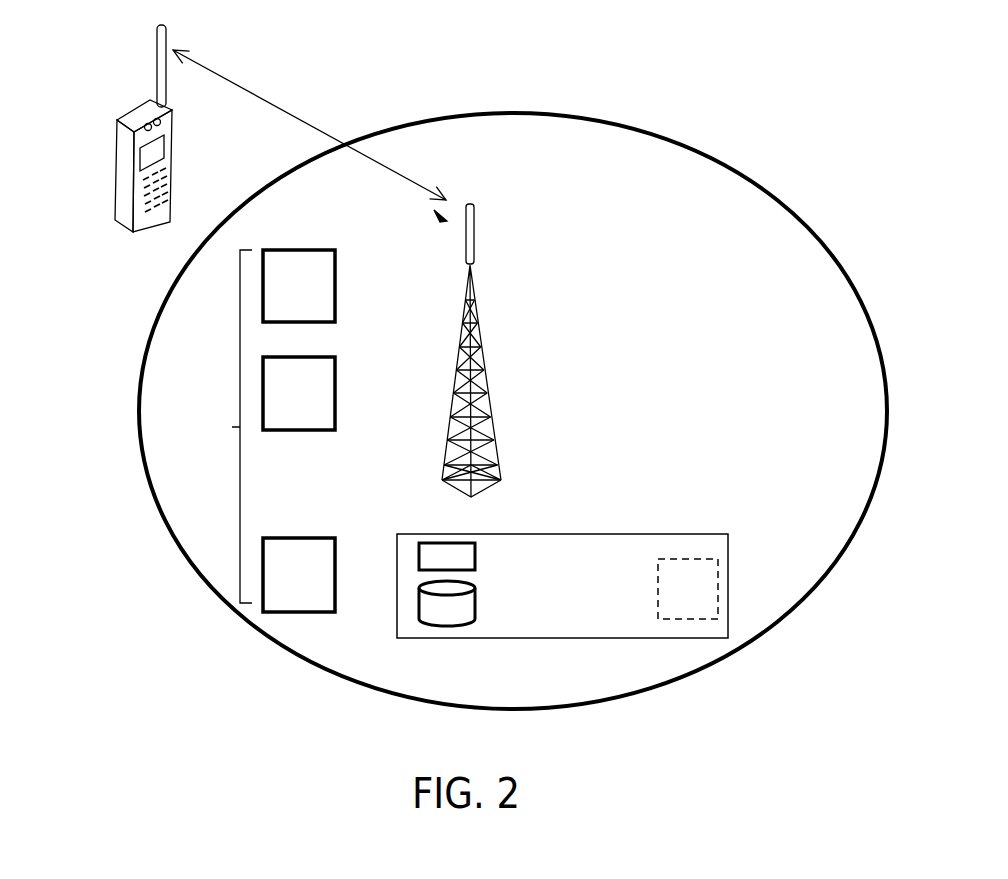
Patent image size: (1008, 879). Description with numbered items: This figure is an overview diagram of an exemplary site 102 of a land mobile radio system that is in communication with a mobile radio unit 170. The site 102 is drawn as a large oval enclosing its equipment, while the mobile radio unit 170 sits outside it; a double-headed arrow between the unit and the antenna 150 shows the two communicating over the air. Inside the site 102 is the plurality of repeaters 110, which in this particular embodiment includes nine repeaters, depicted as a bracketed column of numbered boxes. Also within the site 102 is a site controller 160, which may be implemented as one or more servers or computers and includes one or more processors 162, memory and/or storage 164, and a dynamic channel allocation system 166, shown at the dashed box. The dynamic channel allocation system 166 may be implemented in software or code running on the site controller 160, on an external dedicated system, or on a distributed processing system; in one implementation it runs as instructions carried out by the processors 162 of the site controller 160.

The site 102 is at (617, 118).
The plurality of repeaters 110 is at (251, 431).
The antenna 150 is at (475, 322).
The site controller 160 is at (597, 546).
The processors 162 is at (447, 556).
The memory and/or storage 164 is at (447, 603).
The dynamic channel allocation system 166 is at (701, 559).
The mobile radio unit 170 is at (131, 106).